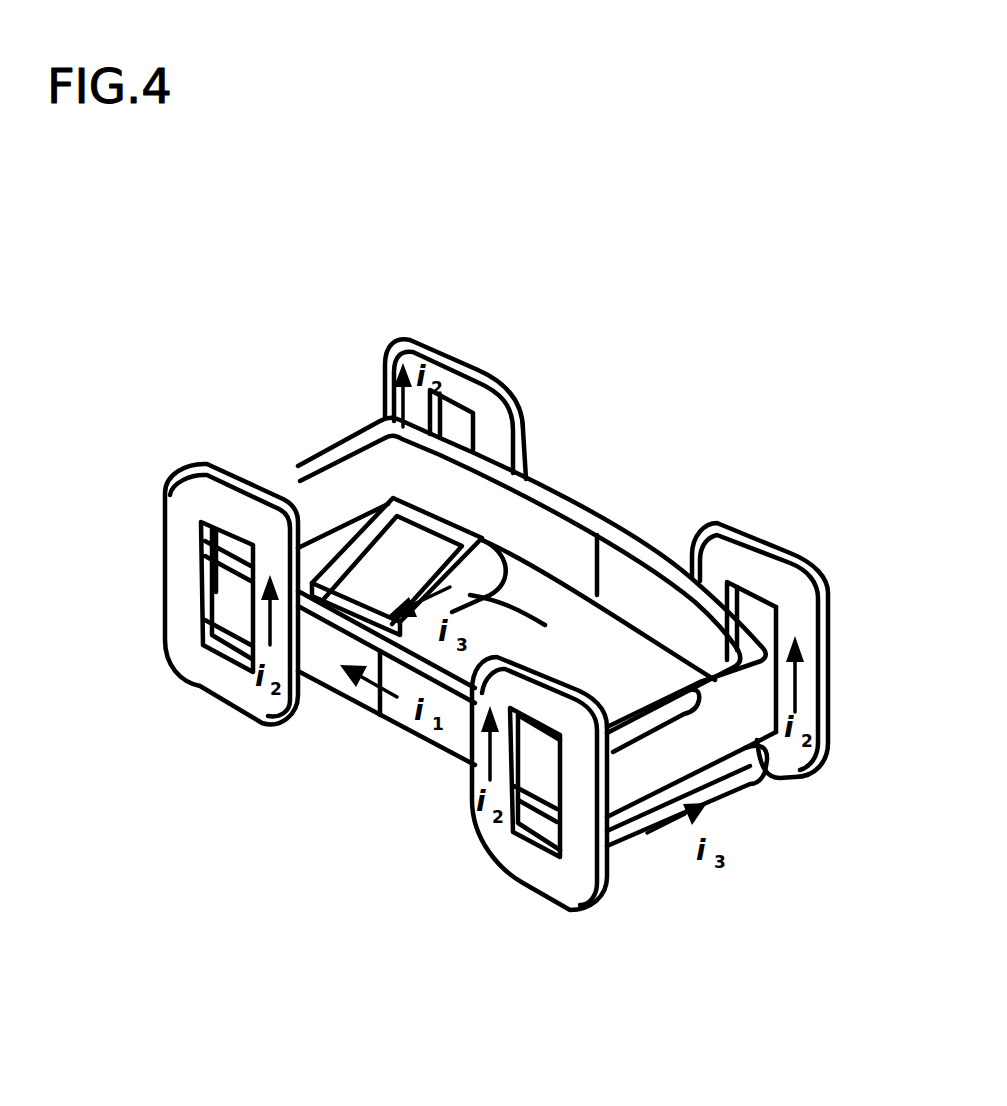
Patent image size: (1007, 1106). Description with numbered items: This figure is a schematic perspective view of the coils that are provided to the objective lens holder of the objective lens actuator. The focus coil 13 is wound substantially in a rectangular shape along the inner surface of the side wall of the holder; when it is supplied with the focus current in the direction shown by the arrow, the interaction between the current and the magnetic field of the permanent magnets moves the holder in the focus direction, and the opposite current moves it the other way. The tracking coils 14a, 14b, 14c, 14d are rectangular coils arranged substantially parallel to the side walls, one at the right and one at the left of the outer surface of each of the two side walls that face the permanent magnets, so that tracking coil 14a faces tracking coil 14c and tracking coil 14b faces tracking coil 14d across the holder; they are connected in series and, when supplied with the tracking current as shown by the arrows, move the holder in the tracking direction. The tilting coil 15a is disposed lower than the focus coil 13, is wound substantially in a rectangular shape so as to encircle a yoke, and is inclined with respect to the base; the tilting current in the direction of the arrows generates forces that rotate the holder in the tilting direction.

The focus coil 13 is at (588, 512).
The tracking coil 14a is at (789, 552).
The tracking coil 14b is at (470, 360).
The tracking coil 14c is at (507, 882).
The tracking coil 14d is at (205, 697).
The tilting coil 15a is at (743, 795).